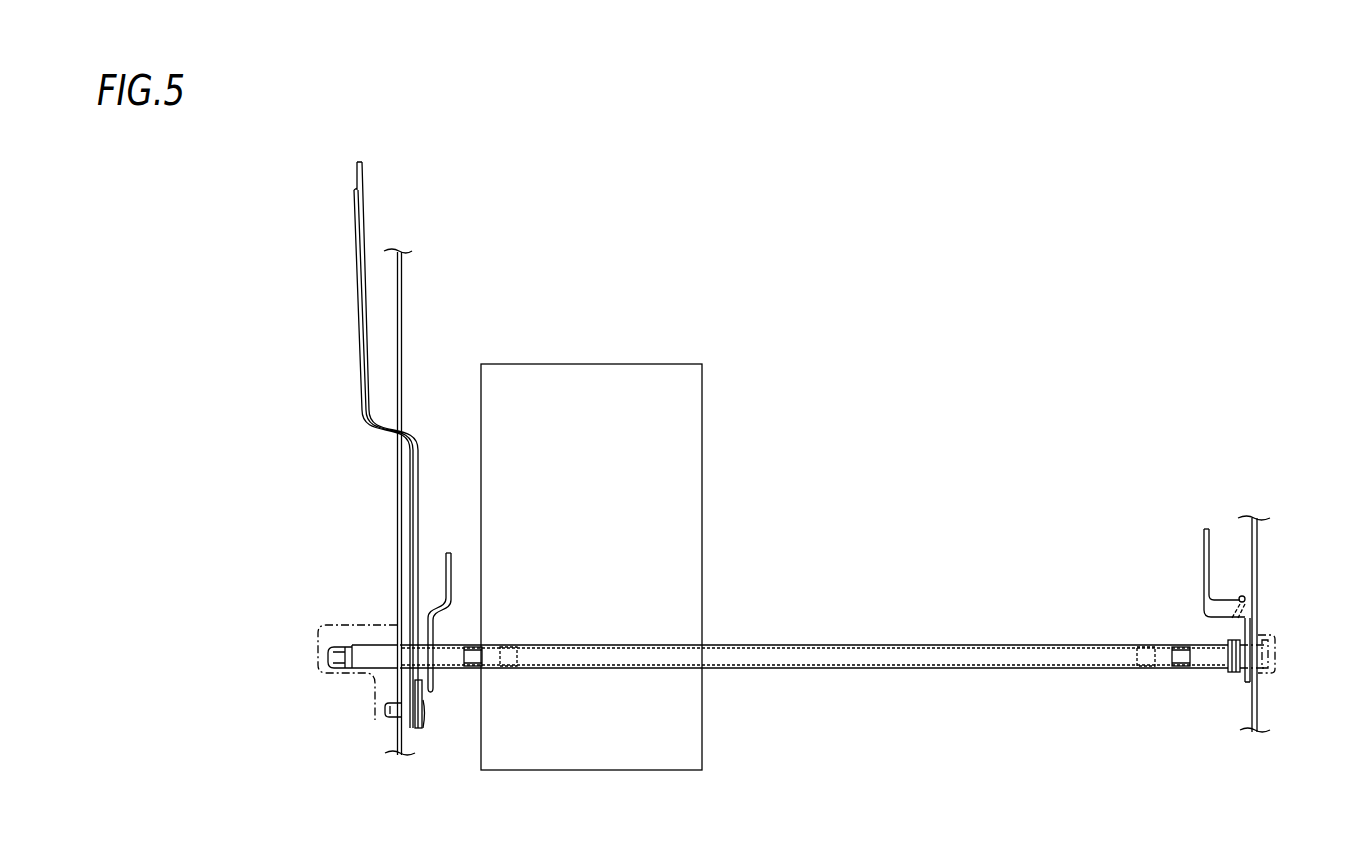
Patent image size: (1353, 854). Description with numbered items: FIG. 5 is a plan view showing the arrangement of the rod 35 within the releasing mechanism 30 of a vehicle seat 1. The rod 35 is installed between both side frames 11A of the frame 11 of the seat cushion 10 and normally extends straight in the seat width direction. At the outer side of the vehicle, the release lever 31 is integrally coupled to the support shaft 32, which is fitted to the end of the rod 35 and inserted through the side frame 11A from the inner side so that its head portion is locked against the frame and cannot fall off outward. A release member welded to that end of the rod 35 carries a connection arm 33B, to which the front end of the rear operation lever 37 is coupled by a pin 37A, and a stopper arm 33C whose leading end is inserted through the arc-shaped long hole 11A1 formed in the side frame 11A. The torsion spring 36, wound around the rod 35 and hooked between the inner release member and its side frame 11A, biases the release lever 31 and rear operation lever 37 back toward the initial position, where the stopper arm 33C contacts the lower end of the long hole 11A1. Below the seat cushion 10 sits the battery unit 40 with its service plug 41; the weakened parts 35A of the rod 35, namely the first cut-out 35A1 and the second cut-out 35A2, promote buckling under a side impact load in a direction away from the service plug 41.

The image forming apparatus 1 is at (987, 348).
The seat cushion 10 is at (812, 477).
The frame plate 11 is at (402, 305).
The side frame 11A is at (1257, 570).
The arc-shaped long hole 11A1 is at (395, 712).
The releasing mechanism 30 is at (380, 563).
The release lever 31 is at (345, 630).
The support shaft 32 is at (375, 668).
The connection arm 33B is at (412, 735).
The stopper arm 33C is at (385, 710).
The rod 35 is at (885, 645).
The weakened parts 35A is at (827, 705).
The first cut-out 35A1 is at (478, 670).
The second cut-out 35A2 is at (515, 670).
The torsion spring 36 is at (1235, 672).
The rear operation lever 37 is at (363, 221).
The pin 37A is at (425, 712).
The battery unit 40 is at (638, 567).
The service plug 41 is at (703, 467).